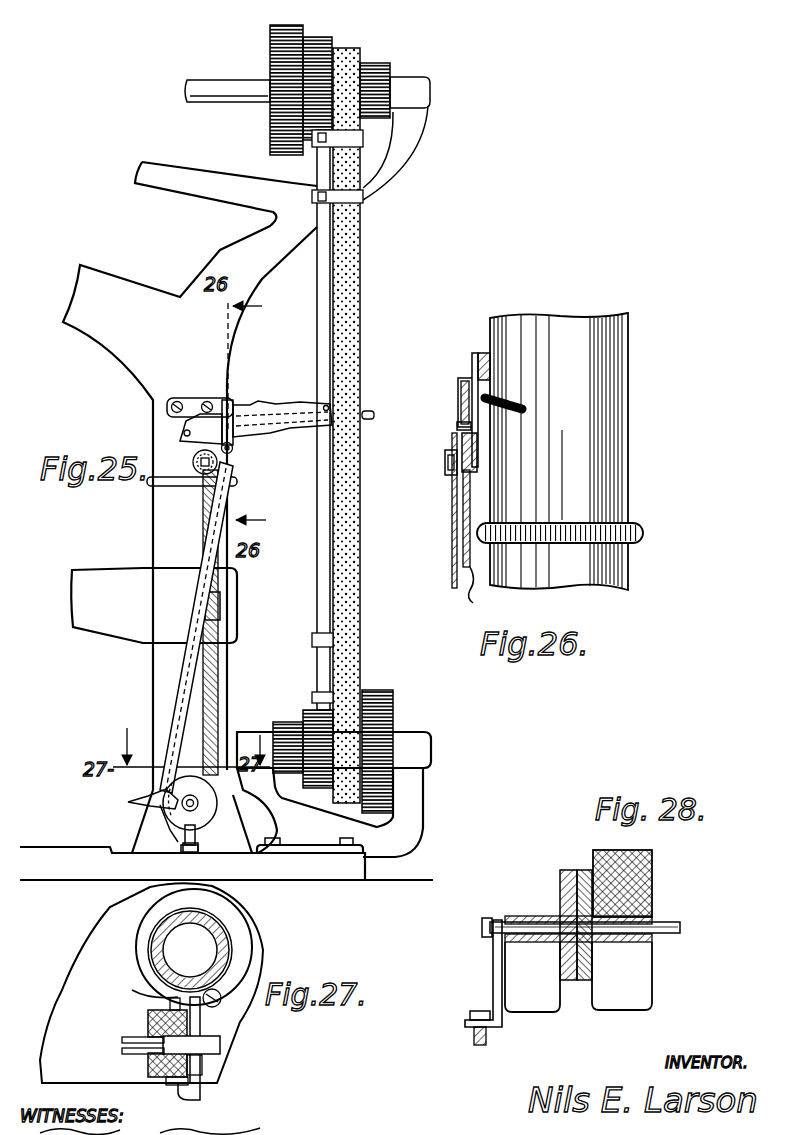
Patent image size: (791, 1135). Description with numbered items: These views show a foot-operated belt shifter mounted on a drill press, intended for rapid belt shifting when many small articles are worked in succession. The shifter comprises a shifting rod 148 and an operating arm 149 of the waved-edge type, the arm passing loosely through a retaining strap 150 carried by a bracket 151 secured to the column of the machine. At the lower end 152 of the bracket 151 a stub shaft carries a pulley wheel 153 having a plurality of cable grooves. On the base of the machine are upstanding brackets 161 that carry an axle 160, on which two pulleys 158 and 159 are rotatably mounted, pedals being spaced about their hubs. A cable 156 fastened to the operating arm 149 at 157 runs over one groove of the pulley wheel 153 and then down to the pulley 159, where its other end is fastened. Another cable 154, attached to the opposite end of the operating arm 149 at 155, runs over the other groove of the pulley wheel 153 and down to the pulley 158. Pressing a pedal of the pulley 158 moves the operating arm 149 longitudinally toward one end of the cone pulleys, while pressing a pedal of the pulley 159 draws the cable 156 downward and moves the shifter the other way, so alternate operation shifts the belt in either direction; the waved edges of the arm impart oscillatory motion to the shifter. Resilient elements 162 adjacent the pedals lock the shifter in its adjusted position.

In FIG. 25, the shifting rod 148 is at (321, 312).
In FIG. 25, the operating arm 149 is at (288, 408).
In FIG. 26, the operating arm 149 is at (472, 394).
In FIG. 25, the retaining strap 150 is at (233, 412).
In FIG. 26, the retaining strap 150 is at (458, 398).
In FIG. 25, the bracket 151 is at (181, 399).
In FIG. 26, the bracket 151 is at (476, 352).
In FIG. 26, the lower end of the bracket 152 is at (478, 448).
In FIG. 25, the pulley wheel 153 is at (232, 452).
In FIG. 26, the pulley wheel 153 is at (448, 470).
In FIG. 25, the cable 154 is at (216, 665).
In FIG. 26, the cable 154 is at (452, 505).
In FIG. 27, the cable 154 is at (130, 1055).
In FIG. 25, the attachment point of cable 155 is at (188, 438).
In FIG. 26, the attachment point of cable 155 is at (458, 427).
In FIG. 25, the cable 156 is at (186, 668).
In FIG. 26, the cable 156 is at (487, 544).
In FIG. 27, the cable 156 is at (136, 1040).
In FIG. 25, the fastening point of cable 157 is at (331, 411).
In FIG. 25, the pulley 158 is at (221, 826).
In FIG. 27, the pulley 158 is at (215, 1061).
In FIG. 28, the pulley 158 is at (572, 962).
In FIG. 27, the pulley 159 is at (214, 1031).
In FIG. 28, the pulley 159 is at (585, 893).
In FIG. 27, the axle 160 is at (206, 1072).
In FIG. 28, the axle 160 is at (668, 921).
In FIG. 25, the upstanding brackets 161 is at (186, 842).
In FIG. 27, the upstanding brackets 161 is at (184, 998).
In FIG. 28, the upstanding brackets 161 is at (492, 974).
In FIG. 25, the resilient elements 162 is at (160, 793).
In FIG. 27, the resilient elements 162 is at (166, 1006).